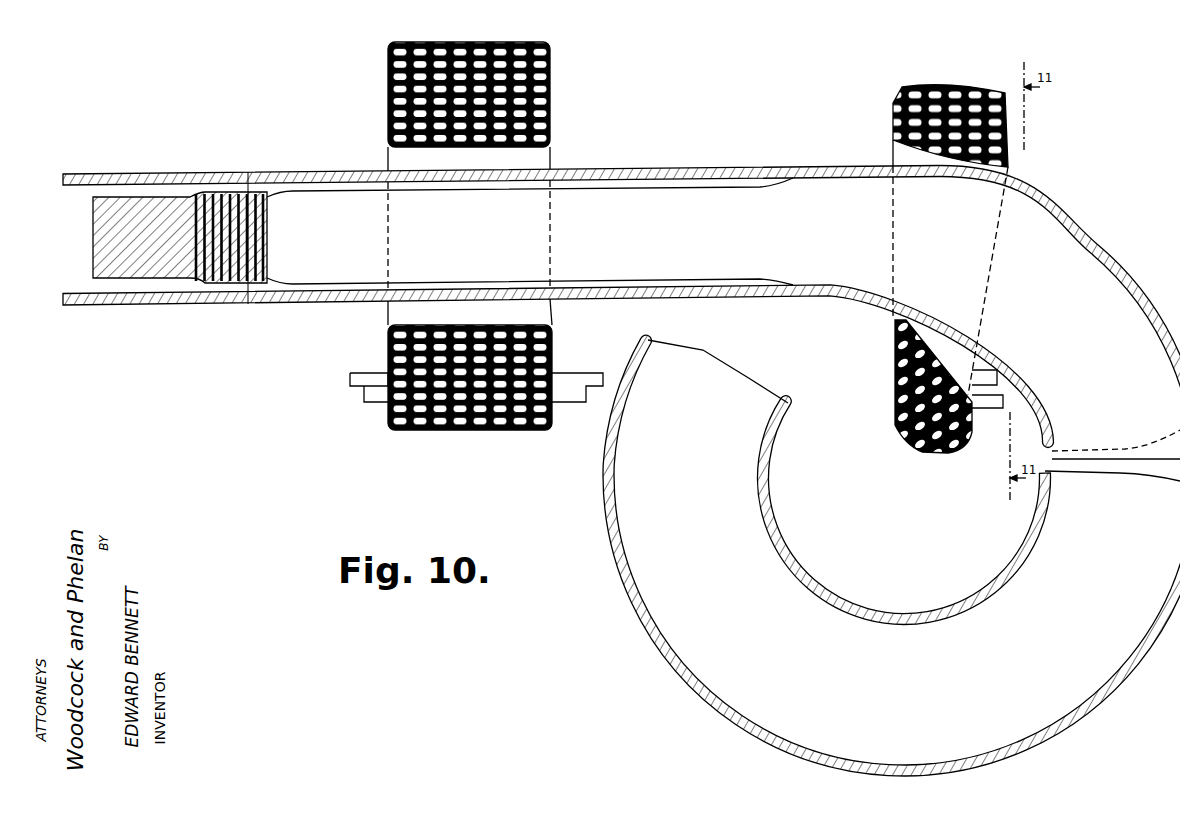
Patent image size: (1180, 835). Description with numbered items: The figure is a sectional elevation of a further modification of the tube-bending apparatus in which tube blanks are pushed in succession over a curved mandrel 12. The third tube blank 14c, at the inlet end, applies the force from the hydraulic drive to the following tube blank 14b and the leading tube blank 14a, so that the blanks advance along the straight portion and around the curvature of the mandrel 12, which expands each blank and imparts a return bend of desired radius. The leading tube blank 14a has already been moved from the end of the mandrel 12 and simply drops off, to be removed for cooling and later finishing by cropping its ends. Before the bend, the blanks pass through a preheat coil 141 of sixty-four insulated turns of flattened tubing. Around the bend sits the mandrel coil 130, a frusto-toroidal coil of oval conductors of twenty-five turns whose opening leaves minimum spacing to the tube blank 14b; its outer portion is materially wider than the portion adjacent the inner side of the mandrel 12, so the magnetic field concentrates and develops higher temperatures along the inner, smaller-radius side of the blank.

The mandrel 12 is at (621, 462).
The tube blank 14a is at (635, 609).
The tube blank 14b is at (627, 172).
The tube blank 14c is at (86, 297).
The mandrel coil 130 is at (866, 388).
The preheat coil 141 is at (362, 121).